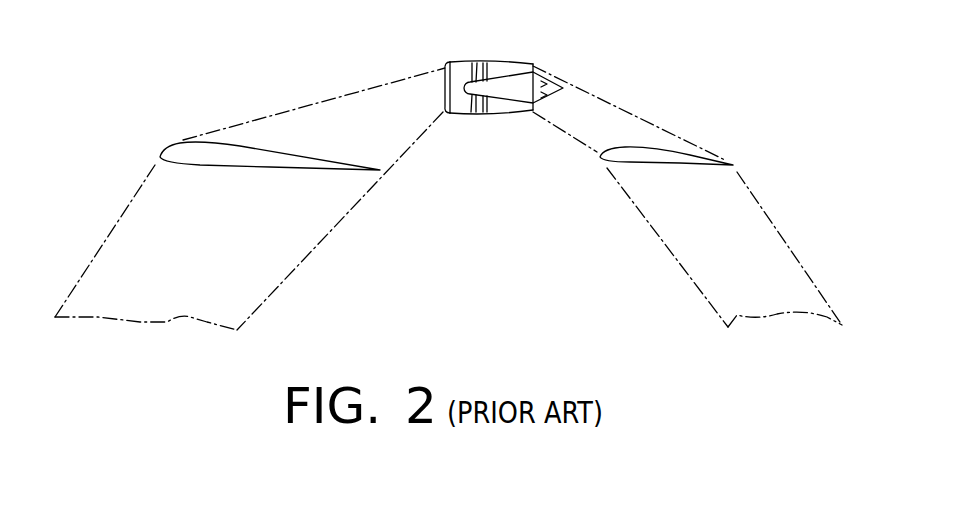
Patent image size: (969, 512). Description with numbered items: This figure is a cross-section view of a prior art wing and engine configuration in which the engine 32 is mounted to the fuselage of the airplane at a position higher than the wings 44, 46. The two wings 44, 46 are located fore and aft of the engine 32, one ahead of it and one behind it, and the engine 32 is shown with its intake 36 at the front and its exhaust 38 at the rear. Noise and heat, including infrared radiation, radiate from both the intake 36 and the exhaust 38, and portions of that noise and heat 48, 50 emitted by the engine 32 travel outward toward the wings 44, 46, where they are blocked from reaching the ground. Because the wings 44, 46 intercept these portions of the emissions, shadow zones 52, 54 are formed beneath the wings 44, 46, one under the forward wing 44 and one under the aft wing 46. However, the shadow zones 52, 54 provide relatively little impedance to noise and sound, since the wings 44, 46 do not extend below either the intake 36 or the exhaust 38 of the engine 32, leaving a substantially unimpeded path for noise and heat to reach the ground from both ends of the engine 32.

The engine 32 is at (492, 55).
The intake 36 is at (447, 80).
The exhaust 38 is at (537, 72).
The wing 44 is at (213, 152).
The wing 46 is at (667, 155).
The noise and heat 48 is at (317, 117).
The noise and heat 50 is at (597, 118).
The shadow zone 52 is at (302, 230).
The shadow zone 54 is at (663, 220).